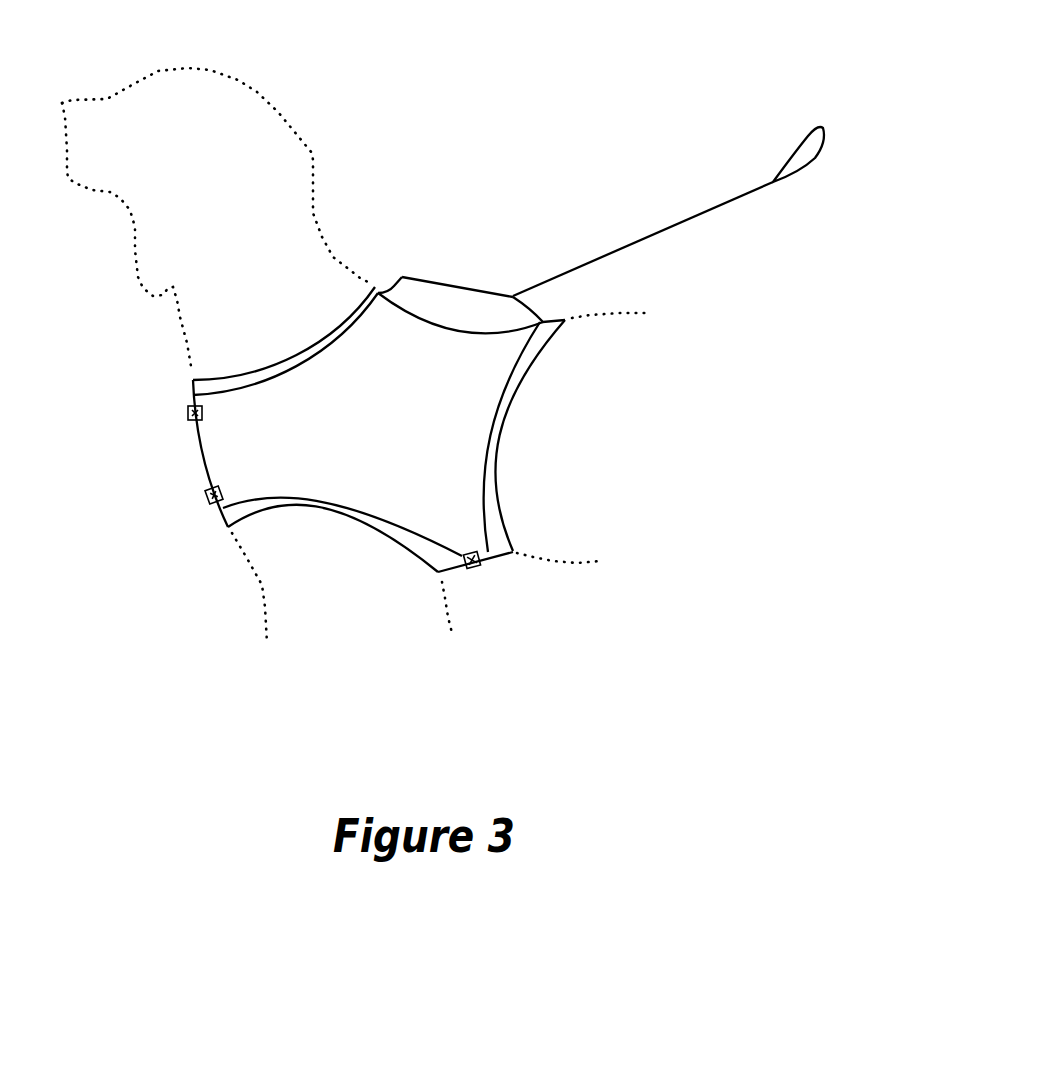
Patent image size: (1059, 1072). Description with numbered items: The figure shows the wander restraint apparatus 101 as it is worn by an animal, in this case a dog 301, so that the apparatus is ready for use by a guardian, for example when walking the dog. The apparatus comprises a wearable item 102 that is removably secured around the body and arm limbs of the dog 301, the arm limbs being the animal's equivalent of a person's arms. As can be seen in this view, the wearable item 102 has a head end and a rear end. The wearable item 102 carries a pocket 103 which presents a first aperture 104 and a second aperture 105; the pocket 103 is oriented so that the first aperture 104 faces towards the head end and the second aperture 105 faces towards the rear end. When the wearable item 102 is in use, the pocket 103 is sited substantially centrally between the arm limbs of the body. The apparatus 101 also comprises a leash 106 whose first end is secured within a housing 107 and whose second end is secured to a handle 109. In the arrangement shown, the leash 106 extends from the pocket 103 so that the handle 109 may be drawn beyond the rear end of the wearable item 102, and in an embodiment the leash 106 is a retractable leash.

The wander restraint apparatus 101 is at (366, 351).
The wearable item 102 is at (470, 450).
The pocket 103 is at (437, 277).
The first aperture 104 is at (381, 285).
The second aperture 105 is at (556, 303).
The leash 106 is at (673, 223).
The housing 107 is at (500, 293).
The handle 109 is at (795, 147).
The dog 301 is at (293, 157).